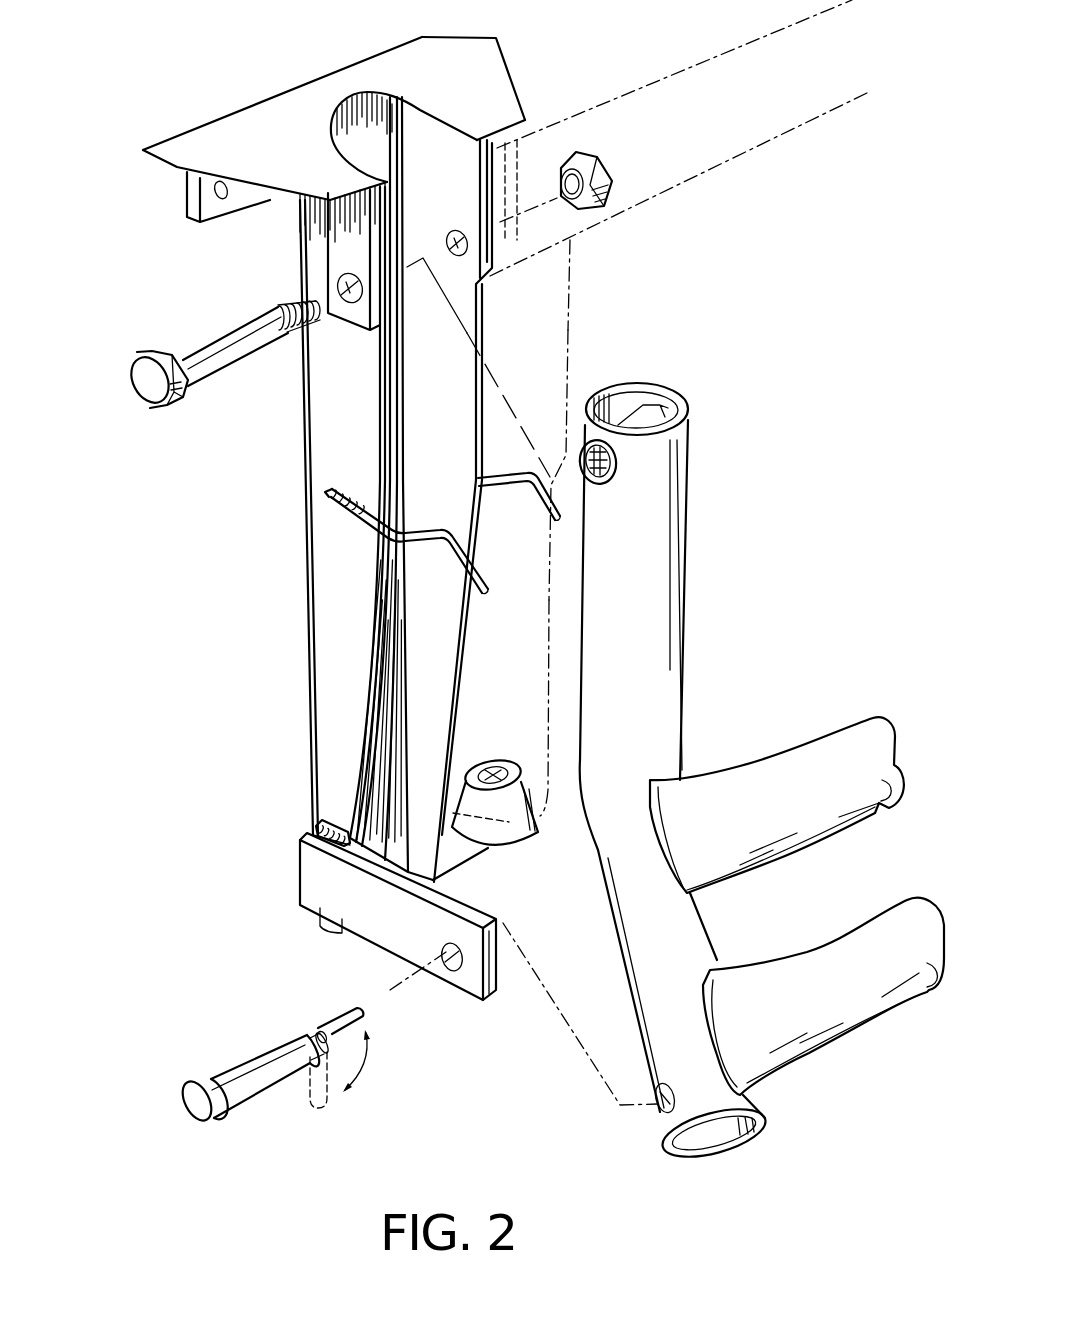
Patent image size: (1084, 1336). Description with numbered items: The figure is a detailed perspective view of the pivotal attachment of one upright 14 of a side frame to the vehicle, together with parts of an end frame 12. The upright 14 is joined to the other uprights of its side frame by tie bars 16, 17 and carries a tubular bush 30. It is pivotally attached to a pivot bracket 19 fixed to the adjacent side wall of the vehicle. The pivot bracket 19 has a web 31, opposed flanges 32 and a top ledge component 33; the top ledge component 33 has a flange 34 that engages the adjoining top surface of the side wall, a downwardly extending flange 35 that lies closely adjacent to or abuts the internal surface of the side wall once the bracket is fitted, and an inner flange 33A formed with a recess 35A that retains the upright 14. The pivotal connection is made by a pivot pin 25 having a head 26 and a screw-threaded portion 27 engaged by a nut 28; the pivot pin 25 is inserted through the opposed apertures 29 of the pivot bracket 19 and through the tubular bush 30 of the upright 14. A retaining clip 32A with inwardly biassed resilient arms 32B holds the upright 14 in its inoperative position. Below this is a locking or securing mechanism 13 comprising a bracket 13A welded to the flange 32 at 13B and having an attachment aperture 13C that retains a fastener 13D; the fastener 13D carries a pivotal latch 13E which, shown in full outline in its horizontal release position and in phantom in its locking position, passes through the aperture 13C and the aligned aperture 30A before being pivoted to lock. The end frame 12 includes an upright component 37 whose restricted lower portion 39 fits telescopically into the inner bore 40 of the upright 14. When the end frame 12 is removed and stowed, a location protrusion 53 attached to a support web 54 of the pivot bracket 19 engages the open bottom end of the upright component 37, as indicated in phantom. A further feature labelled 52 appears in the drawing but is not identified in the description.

The end frame 12 is at (808, 130).
The locking or securing mechanism 13 is at (293, 985).
The bracket 13A is at (381, 916).
The weld 13B is at (317, 832).
The attachment aperture 13C is at (452, 968).
The fastener 13D is at (240, 1077).
The pivotal latch 13E is at (335, 1013).
The upright 14 is at (652, 617).
The tie bar 16 is at (850, 1003).
The tie bar 17 is at (818, 763).
The pivot bracket 19 is at (567, 290).
The pivot pin 25 is at (208, 352).
The head 26 is at (152, 378).
The screw-threaded portion 27 is at (285, 303).
The nut 28 is at (603, 170).
The opposed apertures 29 is at (352, 303).
The tubular bush 30 is at (601, 480).
The aligned aperture 30A is at (658, 1118).
The web 31 is at (390, 853).
The opposed flanges 32 is at (433, 638).
The retaining clip 32A is at (330, 531).
The inwardly biassed resilient arms 32B is at (427, 533).
The top ledge component 33 is at (485, 62).
The inner flange 33A is at (500, 97).
The flange 34 is at (202, 132).
The downwardly extending flange 35 is at (210, 210).
The recess 35A is at (378, 58).
The upright component 37 is at (557, 569).
The restricted lower portion 39 is at (540, 647).
The inner bore 40 is at (713, 1133).
The tube top end 52 is at (543, 377).
The location protrusion 53 is at (530, 833).
The support web 54 is at (453, 848).